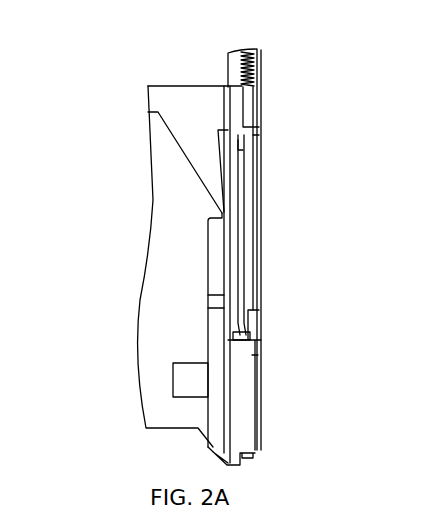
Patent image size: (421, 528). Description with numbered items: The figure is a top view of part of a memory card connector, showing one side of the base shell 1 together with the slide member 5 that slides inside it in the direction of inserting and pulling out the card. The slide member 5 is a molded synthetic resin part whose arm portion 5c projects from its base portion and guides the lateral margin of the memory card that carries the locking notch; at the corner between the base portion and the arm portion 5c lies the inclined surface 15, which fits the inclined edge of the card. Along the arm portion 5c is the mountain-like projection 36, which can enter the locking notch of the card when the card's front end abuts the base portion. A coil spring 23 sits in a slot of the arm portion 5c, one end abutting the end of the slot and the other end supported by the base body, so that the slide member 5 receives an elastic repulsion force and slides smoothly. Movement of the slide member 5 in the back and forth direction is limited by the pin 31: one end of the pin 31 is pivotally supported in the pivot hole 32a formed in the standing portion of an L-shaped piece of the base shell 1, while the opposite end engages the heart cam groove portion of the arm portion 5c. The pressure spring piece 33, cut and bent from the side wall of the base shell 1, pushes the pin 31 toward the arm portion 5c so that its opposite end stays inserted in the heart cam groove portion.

The base shell 1 is at (143, 347).
The slide member 5 is at (188, 102).
The arm portion 5c is at (214, 237).
The inclined surface 15 is at (178, 140).
The coil spring 23 is at (255, 70).
The pin 31 is at (247, 269).
The pivot hole 32a is at (259, 136).
The pressure spring piece 33 is at (255, 323).
The mountain-like projection 36 is at (215, 302).